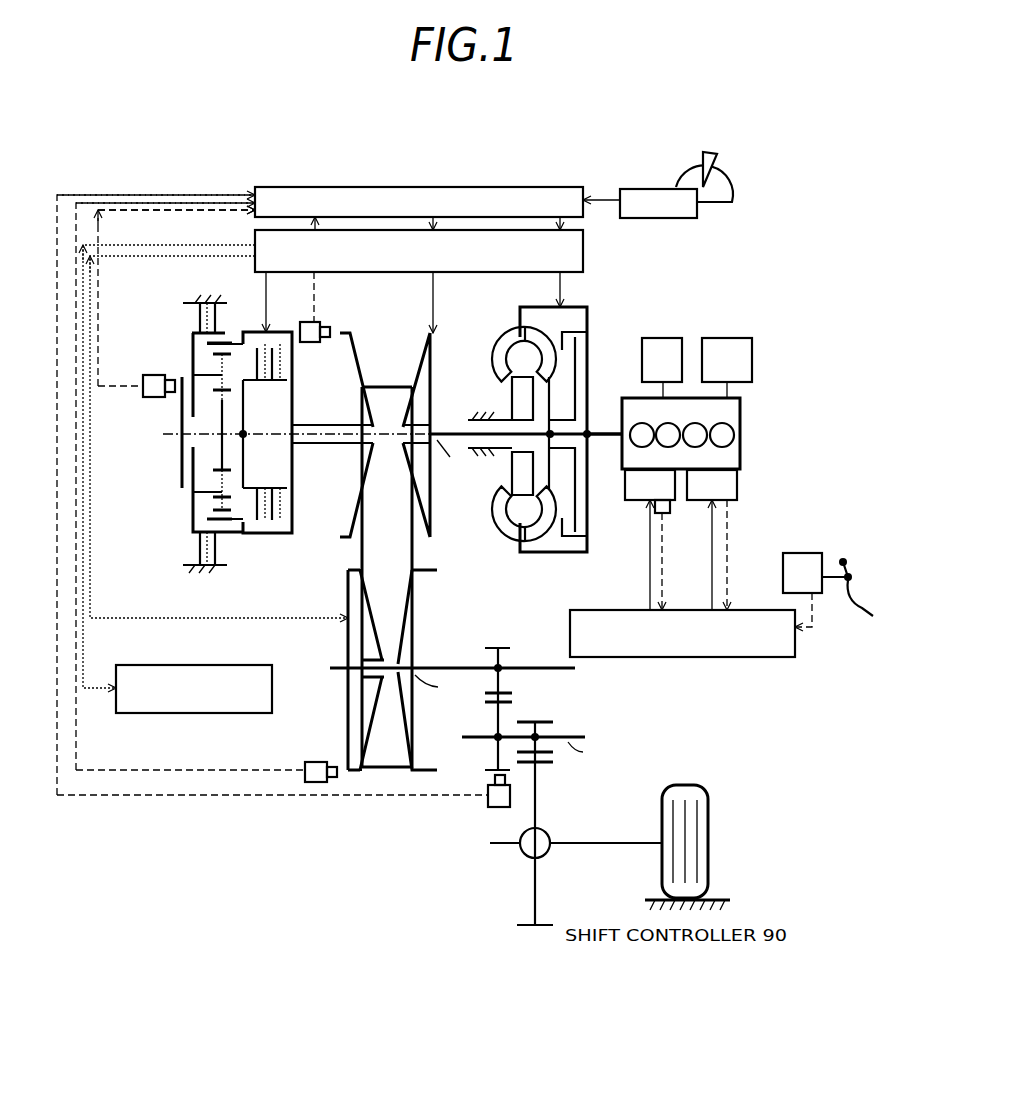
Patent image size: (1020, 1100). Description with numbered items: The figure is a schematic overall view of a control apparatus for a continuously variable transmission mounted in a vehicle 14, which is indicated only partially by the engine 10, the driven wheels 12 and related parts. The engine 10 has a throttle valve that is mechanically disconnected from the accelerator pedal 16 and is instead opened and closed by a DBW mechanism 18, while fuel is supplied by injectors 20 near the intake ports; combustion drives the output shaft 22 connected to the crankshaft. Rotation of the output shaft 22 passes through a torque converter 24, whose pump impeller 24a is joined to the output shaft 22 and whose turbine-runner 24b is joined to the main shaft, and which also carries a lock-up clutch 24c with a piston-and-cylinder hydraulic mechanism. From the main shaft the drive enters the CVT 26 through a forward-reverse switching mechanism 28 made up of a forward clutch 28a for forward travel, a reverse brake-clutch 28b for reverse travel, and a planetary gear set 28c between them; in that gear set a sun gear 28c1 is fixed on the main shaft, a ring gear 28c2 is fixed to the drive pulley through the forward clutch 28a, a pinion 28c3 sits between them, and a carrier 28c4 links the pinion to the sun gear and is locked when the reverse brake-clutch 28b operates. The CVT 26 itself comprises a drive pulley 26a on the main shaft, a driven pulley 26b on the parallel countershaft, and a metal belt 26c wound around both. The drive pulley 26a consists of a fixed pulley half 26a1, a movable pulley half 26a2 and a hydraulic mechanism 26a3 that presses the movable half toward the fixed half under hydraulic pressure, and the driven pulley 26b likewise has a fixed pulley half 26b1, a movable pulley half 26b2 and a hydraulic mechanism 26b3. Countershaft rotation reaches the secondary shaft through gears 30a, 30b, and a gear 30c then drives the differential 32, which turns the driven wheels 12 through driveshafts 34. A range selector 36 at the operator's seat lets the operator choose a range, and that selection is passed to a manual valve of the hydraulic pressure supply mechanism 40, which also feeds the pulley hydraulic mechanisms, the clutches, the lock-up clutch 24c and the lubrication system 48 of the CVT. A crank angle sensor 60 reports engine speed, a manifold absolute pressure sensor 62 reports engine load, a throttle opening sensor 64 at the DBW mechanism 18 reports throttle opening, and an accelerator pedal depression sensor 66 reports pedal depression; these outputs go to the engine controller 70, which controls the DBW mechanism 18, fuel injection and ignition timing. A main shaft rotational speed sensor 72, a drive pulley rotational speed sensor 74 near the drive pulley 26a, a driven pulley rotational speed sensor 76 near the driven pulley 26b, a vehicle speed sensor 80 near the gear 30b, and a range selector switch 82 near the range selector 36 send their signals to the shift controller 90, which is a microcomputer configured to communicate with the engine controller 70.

The engine 10 is at (742, 470).
The driven wheels 12 is at (710, 810).
The vehicle 14 is at (785, 228).
The accelerator pedal 16 is at (870, 610).
The DBW mechanism 18 is at (641, 501).
The injectors 20 is at (703, 501).
The output shaft 22 is at (605, 440).
The torque converter 24 is at (527, 302).
The pump impeller 24a is at (503, 345).
The turbine-runner 24b is at (541, 548).
The lock-up clutch 24c is at (588, 333).
The continuously variable transmission 26 is at (436, 510).
The drive pulley 26a is at (437, 481).
The fixed pulley half 26a1 is at (351, 336).
The movable pulley half 26a2 is at (424, 356).
The hydraulic mechanism 26a3 is at (425, 402).
The driven pulley 26b is at (346, 645).
The fixed pulley half 26b1 is at (432, 573).
The movable pulley half 26b2 is at (348, 573).
The hydraulic mechanism 26b3 is at (358, 700).
The metal belt 26c is at (377, 549).
The forward-reverse switching mechanism 28 is at (167, 312).
The forward clutch 28a is at (269, 382).
The reverse brake-clutch 28b is at (197, 313).
The planetary gear set 28c is at (210, 419).
The sun gear 28c1 is at (218, 452).
The ring gear 28c2 is at (267, 535).
The pinion 28c3 is at (220, 497).
The carrier 28c4 is at (199, 514).
The gear 30a is at (493, 648).
The gear 30b is at (496, 752).
The gear 30c is at (536, 722).
The differential 32 is at (525, 855).
The driveshafts 34 is at (636, 838).
The range selector 36 is at (718, 155).
The hydraulic pressure supply mechanism 40 is at (586, 243).
The lubrication system 48 is at (228, 665).
The crank angle sensor 60 is at (663, 338).
The manifold absolute pressure sensor 62 is at (727, 338).
The throttle opening sensor 64 is at (665, 515).
The accelerator pedal depression sensor 66 is at (803, 553).
The engine controller 70 is at (733, 658).
The NT sensor 72 is at (153, 375).
The NDR sensor 74 is at (304, 322).
The NDN sensor 76 is at (305, 766).
The vehicle speed sensor 80 is at (500, 808).
The range selector switch 82 is at (652, 189).
The shift controller 90 is at (480, 187).